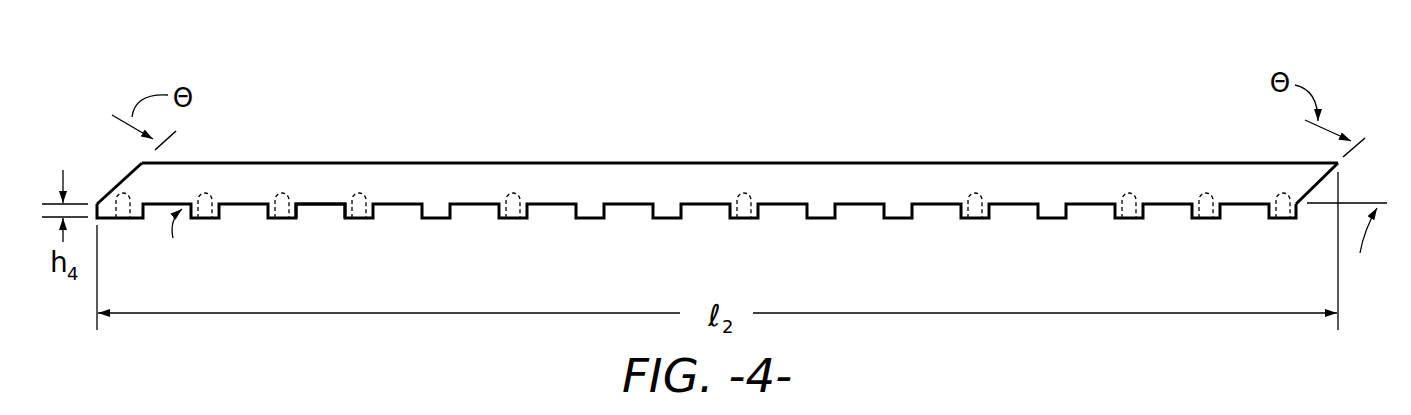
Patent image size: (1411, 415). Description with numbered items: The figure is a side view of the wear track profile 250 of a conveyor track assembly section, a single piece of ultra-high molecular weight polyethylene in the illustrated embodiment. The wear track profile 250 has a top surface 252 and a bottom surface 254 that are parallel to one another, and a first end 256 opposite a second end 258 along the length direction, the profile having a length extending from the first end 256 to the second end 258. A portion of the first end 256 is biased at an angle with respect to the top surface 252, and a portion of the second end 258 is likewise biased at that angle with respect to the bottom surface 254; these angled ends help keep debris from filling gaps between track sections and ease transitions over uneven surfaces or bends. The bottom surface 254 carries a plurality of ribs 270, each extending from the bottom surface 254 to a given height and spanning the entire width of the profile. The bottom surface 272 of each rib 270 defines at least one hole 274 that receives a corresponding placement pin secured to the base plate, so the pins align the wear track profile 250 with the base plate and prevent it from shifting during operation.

The wear track profile 250 is at (719, 167).
The top surface 252 is at (1161, 160).
The bottom surface 254 is at (1156, 208).
The first end 256 is at (96, 175).
The second end 258 is at (1370, 169).
The ribs 270 is at (298, 213).
The bottom surface of rib 272 is at (512, 221).
The hole 274 is at (742, 220).